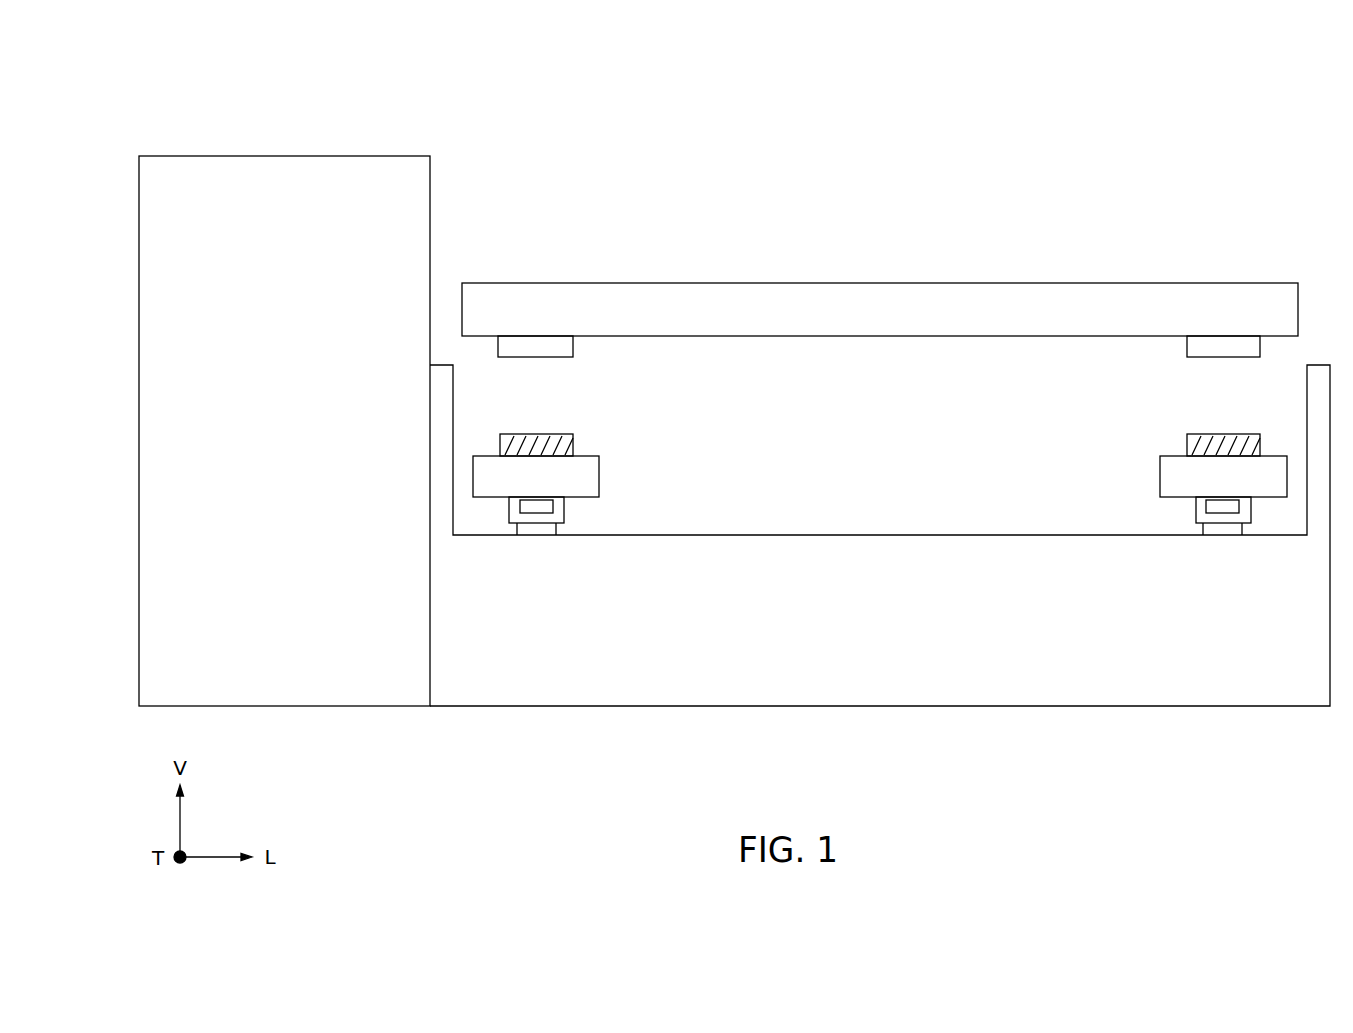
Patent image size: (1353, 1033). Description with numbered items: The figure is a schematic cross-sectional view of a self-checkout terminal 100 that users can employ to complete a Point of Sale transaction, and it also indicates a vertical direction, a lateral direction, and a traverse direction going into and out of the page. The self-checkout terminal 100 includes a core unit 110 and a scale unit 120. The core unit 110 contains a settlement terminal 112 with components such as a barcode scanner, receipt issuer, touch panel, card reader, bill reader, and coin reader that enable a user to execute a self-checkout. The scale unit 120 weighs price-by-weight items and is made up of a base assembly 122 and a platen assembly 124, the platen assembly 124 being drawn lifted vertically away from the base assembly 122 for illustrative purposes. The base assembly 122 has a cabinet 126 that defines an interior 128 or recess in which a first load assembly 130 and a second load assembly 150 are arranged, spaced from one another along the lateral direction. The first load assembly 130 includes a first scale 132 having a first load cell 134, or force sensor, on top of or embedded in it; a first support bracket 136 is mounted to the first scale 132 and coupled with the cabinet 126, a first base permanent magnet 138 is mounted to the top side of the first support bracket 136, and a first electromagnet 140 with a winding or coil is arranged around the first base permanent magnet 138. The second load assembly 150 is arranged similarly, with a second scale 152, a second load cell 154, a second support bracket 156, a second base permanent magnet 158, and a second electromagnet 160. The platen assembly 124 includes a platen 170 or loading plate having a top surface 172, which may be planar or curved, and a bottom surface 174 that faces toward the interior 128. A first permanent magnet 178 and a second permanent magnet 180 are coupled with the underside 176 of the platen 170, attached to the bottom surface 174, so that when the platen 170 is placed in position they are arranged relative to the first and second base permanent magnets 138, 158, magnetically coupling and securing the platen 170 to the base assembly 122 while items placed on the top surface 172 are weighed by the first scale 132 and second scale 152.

The self-checkout terminal 100 is at (1236, 68).
The core unit 110 is at (290, 138).
The settlement terminal 112 is at (302, 443).
The scale unit 120 is at (880, 453).
The base assembly 122 is at (1071, 730).
The platen assembly 124 is at (615, 258).
The cabinet 126 is at (902, 641).
The interior 128 is at (968, 485).
The first load assembly 130 is at (593, 511).
The first scale 132 is at (565, 518).
The first load cell 134 is at (555, 507).
The first support bracket 136 is at (599, 470).
The first base permanent magnet 138 is at (574, 447).
The first electromagnet 140 is at (537, 434).
The second load assembly 150 is at (1169, 504).
The second scale 152 is at (1196, 520).
The second load cell 154 is at (1206, 507).
The second support bracket 156 is at (1160, 470).
The second base permanent magnet 158 is at (1187, 447).
The second electromagnet 160 is at (1233, 434).
The platen 170 is at (1215, 302).
The top surface 172 is at (947, 275).
The bottom surface 174 is at (883, 352).
The underside 176 is at (786, 352).
The first permanent magnet 178 is at (573, 345).
The second permanent magnet 180 is at (1187, 340).